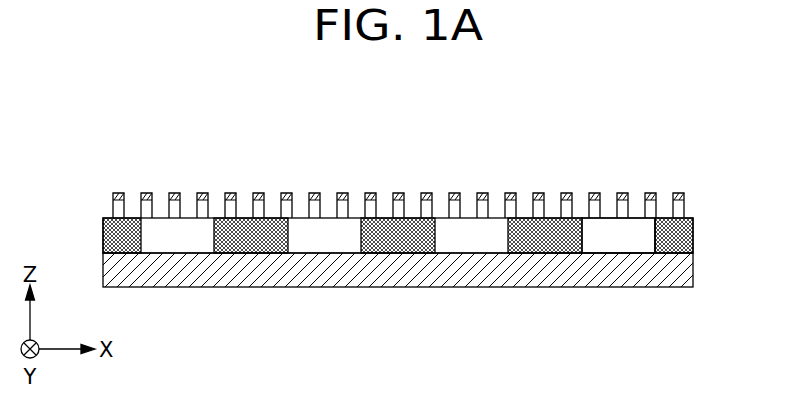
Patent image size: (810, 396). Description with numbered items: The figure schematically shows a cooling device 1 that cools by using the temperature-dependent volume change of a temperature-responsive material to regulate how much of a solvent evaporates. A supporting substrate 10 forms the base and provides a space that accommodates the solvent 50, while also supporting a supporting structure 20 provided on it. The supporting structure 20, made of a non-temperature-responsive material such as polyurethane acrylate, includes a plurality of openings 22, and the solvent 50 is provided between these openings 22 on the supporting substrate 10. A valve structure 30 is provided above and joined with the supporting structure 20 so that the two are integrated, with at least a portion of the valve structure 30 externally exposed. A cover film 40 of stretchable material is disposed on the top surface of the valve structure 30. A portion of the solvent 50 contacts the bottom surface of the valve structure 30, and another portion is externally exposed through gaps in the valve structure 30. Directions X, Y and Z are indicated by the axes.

The cooling device 1 is at (676, 114).
The supporting substrate 10 is at (672, 273).
The supporting structure 20 is at (682, 233).
The openings 22 is at (650, 235).
The valve structure 30 is at (686, 207).
The cover film 40 is at (678, 195).
The solvent 50 is at (607, 237).